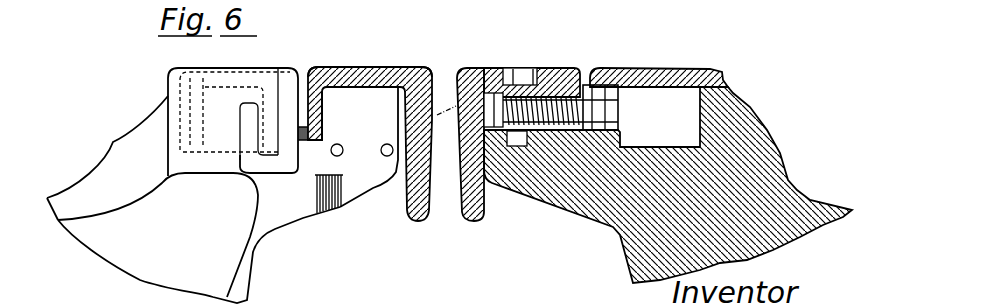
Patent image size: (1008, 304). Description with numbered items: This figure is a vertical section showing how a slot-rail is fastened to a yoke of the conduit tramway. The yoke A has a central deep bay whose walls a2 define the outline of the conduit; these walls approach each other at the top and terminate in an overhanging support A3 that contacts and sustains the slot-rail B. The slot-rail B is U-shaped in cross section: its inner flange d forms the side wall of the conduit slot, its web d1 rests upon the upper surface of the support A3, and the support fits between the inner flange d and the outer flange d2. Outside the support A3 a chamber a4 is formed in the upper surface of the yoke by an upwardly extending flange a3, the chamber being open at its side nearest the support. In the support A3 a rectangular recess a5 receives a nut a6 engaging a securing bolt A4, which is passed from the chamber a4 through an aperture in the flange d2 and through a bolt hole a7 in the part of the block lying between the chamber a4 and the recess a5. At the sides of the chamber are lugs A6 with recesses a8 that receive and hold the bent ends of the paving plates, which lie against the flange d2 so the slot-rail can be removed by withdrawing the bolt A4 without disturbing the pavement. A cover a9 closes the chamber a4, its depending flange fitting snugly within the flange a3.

The yoke A is at (427, 192).
The walls of the bay a2 is at (247, 273).
The upwardly extending flange a3 is at (750, 62).
The chamber a4 is at (702, 121).
The rectangular recess a5 is at (470, 147).
The nut a6 is at (535, 136).
The bolt hole a7 is at (523, 65).
The recess of lug a8 is at (320, 88).
The cover a9 is at (660, 68).
The slot-rail B is at (467, 67).
The inner flange d is at (420, 222).
The web d1 is at (347, 73).
The outer flange d2 is at (323, 130).
The overhanging support A3 is at (488, 222).
The securing bolt A4 is at (305, 78).
The lug A6 is at (288, 165).